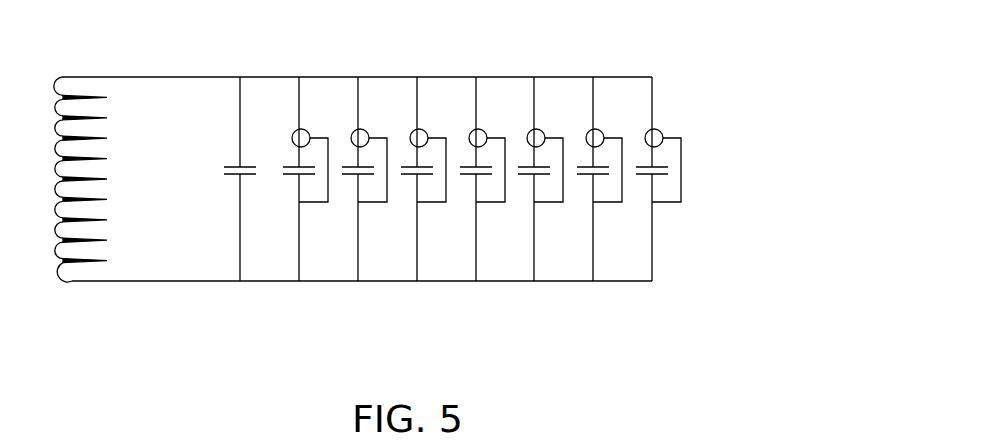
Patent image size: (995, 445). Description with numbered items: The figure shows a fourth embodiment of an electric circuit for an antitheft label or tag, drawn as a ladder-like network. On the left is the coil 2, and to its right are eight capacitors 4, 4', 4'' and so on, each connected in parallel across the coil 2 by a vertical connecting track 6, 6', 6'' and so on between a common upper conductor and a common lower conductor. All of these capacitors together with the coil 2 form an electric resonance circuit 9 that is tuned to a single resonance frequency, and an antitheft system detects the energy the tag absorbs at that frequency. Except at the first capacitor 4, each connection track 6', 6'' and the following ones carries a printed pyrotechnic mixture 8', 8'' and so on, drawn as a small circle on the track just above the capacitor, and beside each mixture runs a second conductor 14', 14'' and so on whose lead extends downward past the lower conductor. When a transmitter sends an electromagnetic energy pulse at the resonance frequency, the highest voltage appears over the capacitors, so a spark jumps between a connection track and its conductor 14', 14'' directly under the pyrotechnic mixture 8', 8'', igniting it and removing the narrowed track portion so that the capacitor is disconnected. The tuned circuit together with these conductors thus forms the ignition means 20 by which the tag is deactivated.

The coil 2 is at (95, 223).
The electric resonance circuit 9 is at (132, 263).
The ignition means 20 is at (255, 272).
The connecting track 6 is at (266, 152).
The connection track 6' is at (327, 152).
The connection track 6'' is at (387, 152).
The capacitor 4 is at (229, 214).
The capacitor 4' is at (287, 214).
The capacitor 4'' is at (345, 214).
The pyrotechnic mixture 8' is at (283, 118).
The pyrotechnic mixture 8'' is at (341, 118).
The conductor 14' is at (311, 244).
The conductor 14'' is at (371, 244).